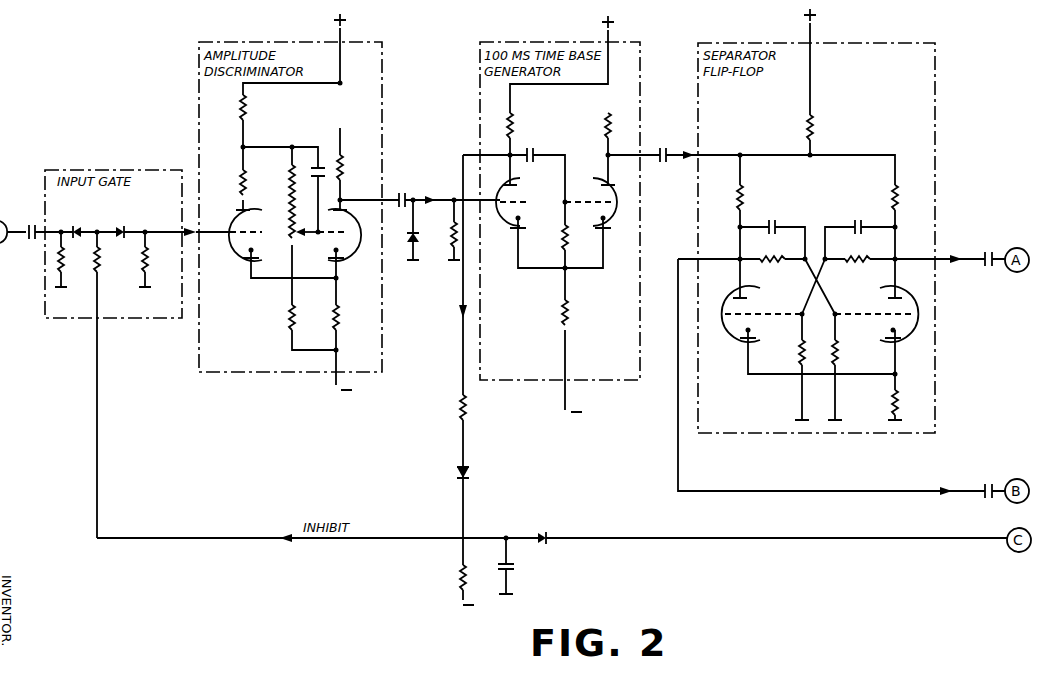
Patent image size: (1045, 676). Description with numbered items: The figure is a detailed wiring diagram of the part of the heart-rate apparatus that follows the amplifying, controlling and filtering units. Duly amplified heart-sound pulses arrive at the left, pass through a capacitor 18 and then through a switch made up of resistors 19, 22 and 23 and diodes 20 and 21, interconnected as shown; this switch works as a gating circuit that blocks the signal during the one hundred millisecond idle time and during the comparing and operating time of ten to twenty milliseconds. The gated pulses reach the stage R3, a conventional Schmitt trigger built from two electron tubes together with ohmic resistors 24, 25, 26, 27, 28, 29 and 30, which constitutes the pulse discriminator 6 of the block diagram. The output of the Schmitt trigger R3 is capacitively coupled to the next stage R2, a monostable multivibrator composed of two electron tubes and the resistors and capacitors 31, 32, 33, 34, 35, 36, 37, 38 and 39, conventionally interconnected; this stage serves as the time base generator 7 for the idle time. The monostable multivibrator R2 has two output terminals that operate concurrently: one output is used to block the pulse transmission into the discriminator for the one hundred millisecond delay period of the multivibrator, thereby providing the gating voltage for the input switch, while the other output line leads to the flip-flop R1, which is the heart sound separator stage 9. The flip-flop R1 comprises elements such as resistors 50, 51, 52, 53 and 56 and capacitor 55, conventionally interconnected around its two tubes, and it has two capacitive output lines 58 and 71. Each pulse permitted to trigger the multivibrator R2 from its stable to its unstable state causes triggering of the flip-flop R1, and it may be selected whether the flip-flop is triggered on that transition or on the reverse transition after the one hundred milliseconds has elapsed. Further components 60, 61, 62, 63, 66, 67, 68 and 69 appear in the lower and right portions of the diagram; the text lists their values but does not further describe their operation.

The discriminator 6 is at (383, 42).
The time base generator 7 is at (640, 42).
The heart sound separator stage 9 is at (924, 43).
The capacitor 18 is at (36, 224).
The resistor 19 is at (70, 259).
The diode 20 is at (75, 228).
The diode 21 is at (120, 228).
The resistor 22 is at (154, 259).
The resistor 23 is at (108, 385).
The ohmic resistor 24 is at (294, 318).
The ohmic resistor 25 is at (339, 318).
The ohmic resistor 26 is at (240, 186).
The ohmic resistor 27 is at (302, 226).
The capacitor 28 is at (314, 170).
The ohmic resistor 29 is at (343, 163).
The ohmic resistor 30 is at (246, 110).
The capacitor 31 is at (400, 193).
The diode 32 is at (411, 242).
The resistor 33 is at (452, 232).
The resistor 34 is at (562, 320).
The potentiometer 35 is at (562, 242).
The capacitor 36 is at (535, 152).
The resistor 37 is at (507, 130).
The resistor 38 is at (610, 128).
The capacitor 39 is at (661, 170).
The resistor 50 is at (765, 264).
The resistor 51 is at (815, 128).
The resistor 52 is at (745, 196).
The resistor 53 is at (892, 197).
The capacitor 55 is at (853, 227).
The resistor 56 is at (774, 226).
The capacitive output line 58 is at (991, 252).
The resistor 60 is at (458, 408).
The resistor 61 is at (456, 474).
The capacitor 62 is at (456, 578).
The capacitor 63 is at (513, 578).
The resistor 66 is at (541, 533).
The resistor 67 is at (796, 358).
The resistor 68 is at (841, 356).
The resistor 69 is at (899, 408).
The capacitive output line 71 is at (989, 489).
The flip-flop R1 is at (734, 350).
The monostable multivibrator R2 is at (512, 272).
The Schmitt trigger R3 is at (238, 270).